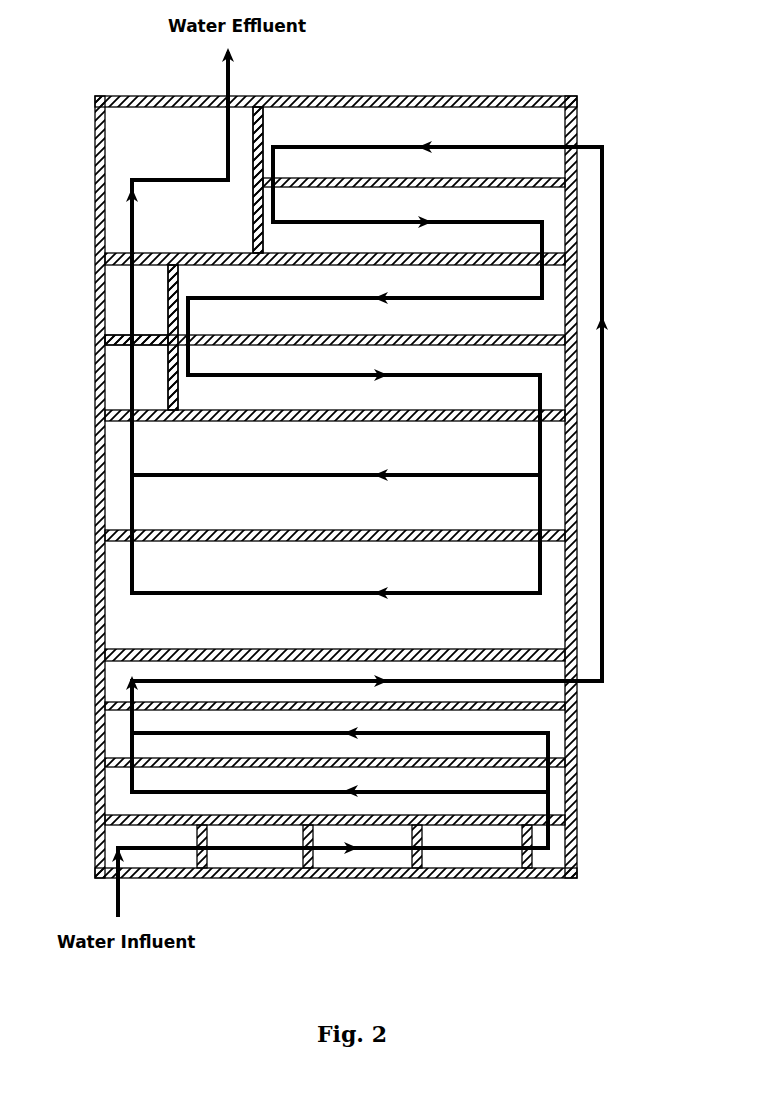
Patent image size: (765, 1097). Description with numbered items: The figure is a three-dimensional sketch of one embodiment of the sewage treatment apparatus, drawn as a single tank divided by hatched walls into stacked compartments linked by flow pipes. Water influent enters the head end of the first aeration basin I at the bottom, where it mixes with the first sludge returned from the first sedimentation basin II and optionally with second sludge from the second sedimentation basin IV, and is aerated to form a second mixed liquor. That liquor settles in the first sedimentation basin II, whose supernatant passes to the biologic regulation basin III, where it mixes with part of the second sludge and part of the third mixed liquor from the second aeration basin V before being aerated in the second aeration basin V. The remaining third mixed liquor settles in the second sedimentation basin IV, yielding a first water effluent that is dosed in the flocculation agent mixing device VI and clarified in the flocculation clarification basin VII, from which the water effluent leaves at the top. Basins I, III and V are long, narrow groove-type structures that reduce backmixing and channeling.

The first aeration basin I is at (180, 863).
The first sedimentation basin II is at (553, 745).
The biologic regulation basin III is at (548, 690).
The second sedimentation basin IV is at (548, 478).
The second aeration basin V is at (552, 160).
The flocculation agent mixing device VI is at (118, 387).
The flocculation clarification basin VII is at (120, 150).